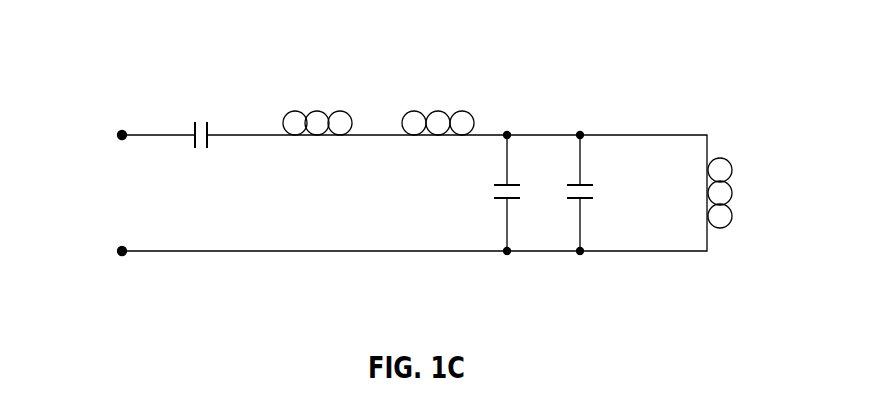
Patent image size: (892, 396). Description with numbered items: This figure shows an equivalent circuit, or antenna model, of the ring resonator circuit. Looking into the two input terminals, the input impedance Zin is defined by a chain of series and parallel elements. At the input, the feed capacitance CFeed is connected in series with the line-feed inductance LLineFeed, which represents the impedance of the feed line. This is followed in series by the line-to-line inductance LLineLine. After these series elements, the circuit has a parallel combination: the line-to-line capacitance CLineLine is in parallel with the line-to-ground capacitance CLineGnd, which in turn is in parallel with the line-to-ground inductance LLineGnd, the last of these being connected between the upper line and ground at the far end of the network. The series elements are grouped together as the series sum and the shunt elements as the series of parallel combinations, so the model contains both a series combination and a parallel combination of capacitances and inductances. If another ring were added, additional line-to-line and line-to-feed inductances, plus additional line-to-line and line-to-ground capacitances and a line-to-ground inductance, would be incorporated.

The feed capacitance CFeed is at (200, 108).
The line-feed inductance LLineFeed is at (317, 101).
The line-to-line inductance LLineLine is at (503, 75).
The line-to-line capacitance CLineLine is at (452, 193).
The line-to-ground capacitance CLineGnd is at (634, 193).
The line-to-ground inductance LLineGnd is at (780, 193).
The input impedance Zin is at (127, 193).